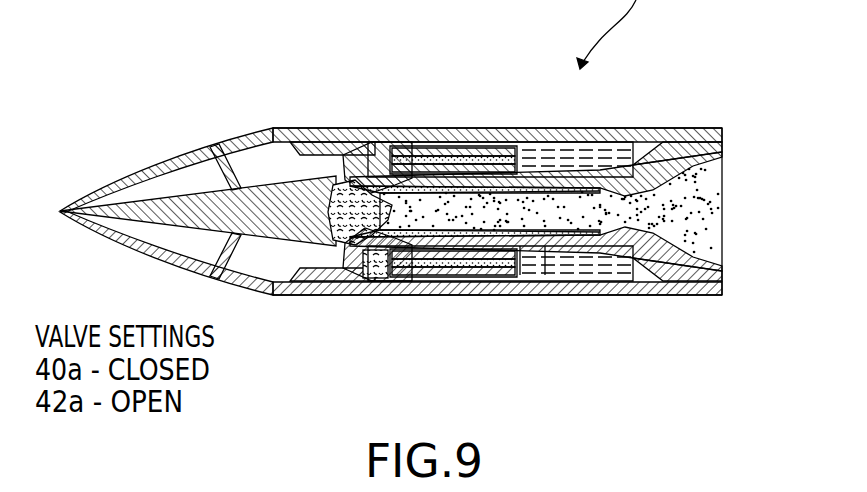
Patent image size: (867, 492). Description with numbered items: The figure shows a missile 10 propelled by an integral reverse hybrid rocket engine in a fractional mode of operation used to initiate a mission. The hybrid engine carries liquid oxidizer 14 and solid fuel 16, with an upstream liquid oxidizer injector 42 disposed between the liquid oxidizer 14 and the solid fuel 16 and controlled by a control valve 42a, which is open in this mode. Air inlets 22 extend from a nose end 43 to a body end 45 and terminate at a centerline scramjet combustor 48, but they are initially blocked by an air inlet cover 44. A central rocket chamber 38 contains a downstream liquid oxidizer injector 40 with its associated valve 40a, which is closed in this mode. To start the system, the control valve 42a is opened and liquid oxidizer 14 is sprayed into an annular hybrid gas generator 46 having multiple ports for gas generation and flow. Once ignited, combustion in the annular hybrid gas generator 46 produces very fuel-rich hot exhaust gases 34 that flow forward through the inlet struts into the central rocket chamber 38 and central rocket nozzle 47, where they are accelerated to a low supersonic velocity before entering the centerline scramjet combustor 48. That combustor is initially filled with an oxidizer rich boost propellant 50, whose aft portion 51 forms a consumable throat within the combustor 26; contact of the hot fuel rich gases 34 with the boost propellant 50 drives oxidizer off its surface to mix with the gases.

The missile 10 is at (138, 93).
The liquid oxidizer 14 is at (598, 272).
The solid fuel 16 is at (430, 285).
The air inlets 22 is at (301, 129).
The combustor 26 is at (693, 183).
The fuel-rich hot exhaust gases 34 is at (362, 270).
The central rocket chamber 38 is at (325, 150).
The downstream liquid oxidizer injector 40 is at (346, 162).
The valve 40a is at (352, 172).
The upstream liquid oxidizer injector 42 is at (525, 272).
The control valve 42a is at (545, 265).
The nose end 43 is at (223, 129).
The air inlet cover 44 is at (73, 200).
The body end 45 is at (403, 265).
The annular hybrid gas generator 46 is at (488, 270).
The central rocket nozzle 47 is at (410, 165).
The centerline scramjet combustor 48 is at (490, 212).
The oxidizer rich boost propellant 50 is at (708, 150).
The aft portion 51 is at (647, 228).